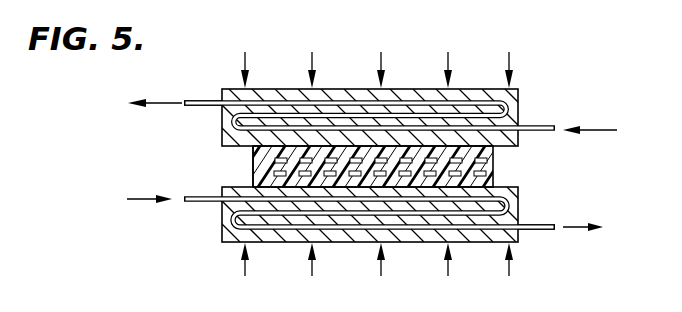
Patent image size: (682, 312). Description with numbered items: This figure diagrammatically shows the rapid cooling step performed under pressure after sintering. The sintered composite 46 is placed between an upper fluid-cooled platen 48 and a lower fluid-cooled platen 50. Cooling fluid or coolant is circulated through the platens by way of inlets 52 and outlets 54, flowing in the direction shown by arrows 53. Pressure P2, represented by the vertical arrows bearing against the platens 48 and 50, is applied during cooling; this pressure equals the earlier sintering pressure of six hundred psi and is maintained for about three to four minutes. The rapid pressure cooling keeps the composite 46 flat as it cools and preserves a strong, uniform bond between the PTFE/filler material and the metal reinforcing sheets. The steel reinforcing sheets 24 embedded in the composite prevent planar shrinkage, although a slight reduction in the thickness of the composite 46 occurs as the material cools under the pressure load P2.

The steel reinforcing sheets 24 is at (493, 173).
The sintered composite 46 is at (253, 162).
The fluid-cooled platen 48 is at (348, 89).
The fluid-cooled platen 50 is at (340, 243).
The inlets 52 is at (543, 127).
The arrows 53 is at (160, 110).
The outlets 54 is at (203, 100).
The pressure P2 is at (377, 165).